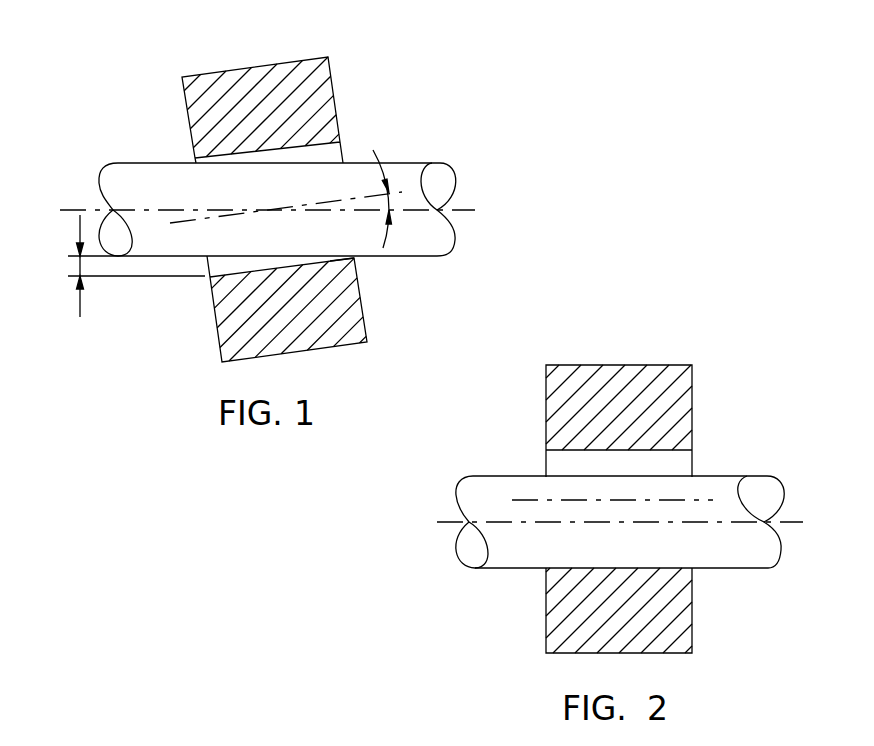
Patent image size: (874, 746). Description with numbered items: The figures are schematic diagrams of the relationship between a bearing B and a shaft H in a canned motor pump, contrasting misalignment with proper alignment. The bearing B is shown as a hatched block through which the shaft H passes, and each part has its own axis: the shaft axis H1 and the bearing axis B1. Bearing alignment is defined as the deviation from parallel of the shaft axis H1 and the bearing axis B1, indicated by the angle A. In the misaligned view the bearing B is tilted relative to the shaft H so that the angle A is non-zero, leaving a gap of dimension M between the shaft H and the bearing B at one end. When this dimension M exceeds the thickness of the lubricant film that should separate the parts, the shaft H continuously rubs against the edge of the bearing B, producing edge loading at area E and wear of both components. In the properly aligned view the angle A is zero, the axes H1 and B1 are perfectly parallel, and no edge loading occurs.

In FIG. 1, the bearing B is at (253, 67).
In FIG. 2, the bearing B is at (613, 365).
In FIG. 1, the shaft H is at (155, 168).
In FIG. 2, the shaft H is at (716, 555).
In FIG. 1, the bearing axis B1 is at (358, 198).
In FIG. 2, the bearing axis B1 is at (701, 497).
In FIG. 1, the shaft axis H1 is at (460, 208).
In FIG. 2, the shaft axis H1 is at (790, 522).
In FIG. 1, the angle A is at (394, 200).
In FIG. 1, the dimension m M is at (70, 265).
In FIG. 1, the edge loading area E is at (352, 256).